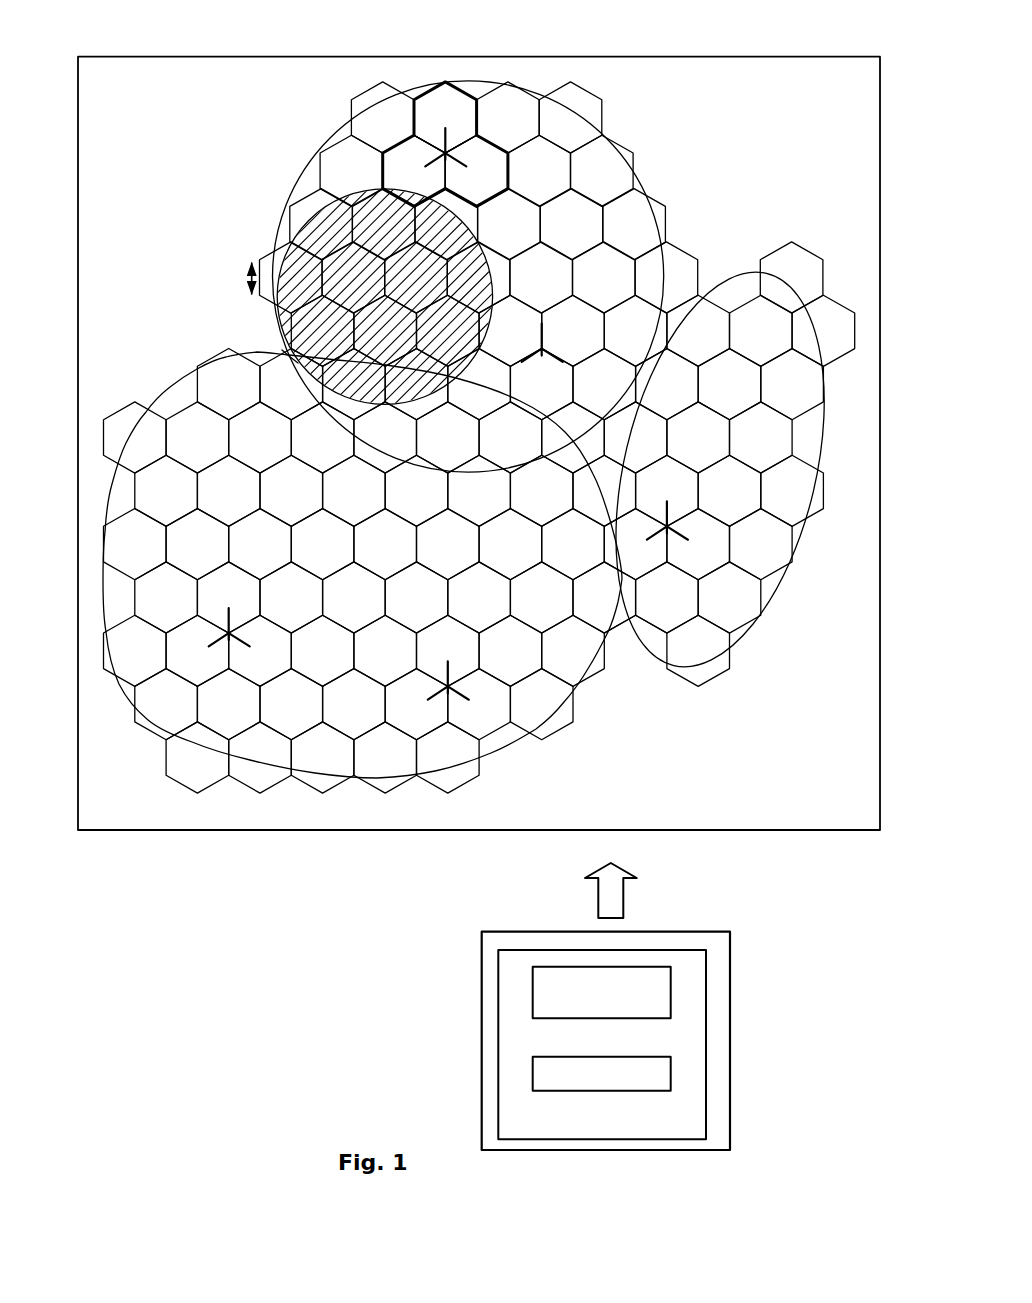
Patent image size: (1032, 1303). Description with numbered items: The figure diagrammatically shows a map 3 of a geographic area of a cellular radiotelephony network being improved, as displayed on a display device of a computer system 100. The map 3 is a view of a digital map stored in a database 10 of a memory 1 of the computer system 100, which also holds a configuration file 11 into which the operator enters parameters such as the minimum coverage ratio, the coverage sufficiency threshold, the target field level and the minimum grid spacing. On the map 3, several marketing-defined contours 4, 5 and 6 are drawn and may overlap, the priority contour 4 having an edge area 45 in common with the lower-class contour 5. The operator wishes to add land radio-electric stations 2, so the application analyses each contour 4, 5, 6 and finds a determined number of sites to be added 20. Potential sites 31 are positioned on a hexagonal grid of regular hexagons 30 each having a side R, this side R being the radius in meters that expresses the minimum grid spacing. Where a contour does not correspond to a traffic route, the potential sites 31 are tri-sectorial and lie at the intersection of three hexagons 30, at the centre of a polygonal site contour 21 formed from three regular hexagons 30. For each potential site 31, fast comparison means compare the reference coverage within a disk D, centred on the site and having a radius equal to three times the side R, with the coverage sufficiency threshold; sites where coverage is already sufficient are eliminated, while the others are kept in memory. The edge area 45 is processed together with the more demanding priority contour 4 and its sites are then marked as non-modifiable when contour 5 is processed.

The memory 1 is at (706, 1053).
The land radio-electric stations 2 is at (482, 696).
The map 3 is at (849, 52).
The contour 4 is at (294, 182).
The contour 5 is at (364, 573).
The contour 6 is at (724, 469).
The database 10 is at (671, 983).
The configuration file 11 is at (533, 1073).
The sites to be added 20 is at (512, 120).
The site contour 21 is at (485, 132).
The hexagon 30 is at (702, 269).
The potential sites 31 is at (675, 224).
The edge area 45 is at (213, 345).
The computer system 100 is at (730, 1122).
The disk D is at (297, 223).
The side R is at (234, 280).